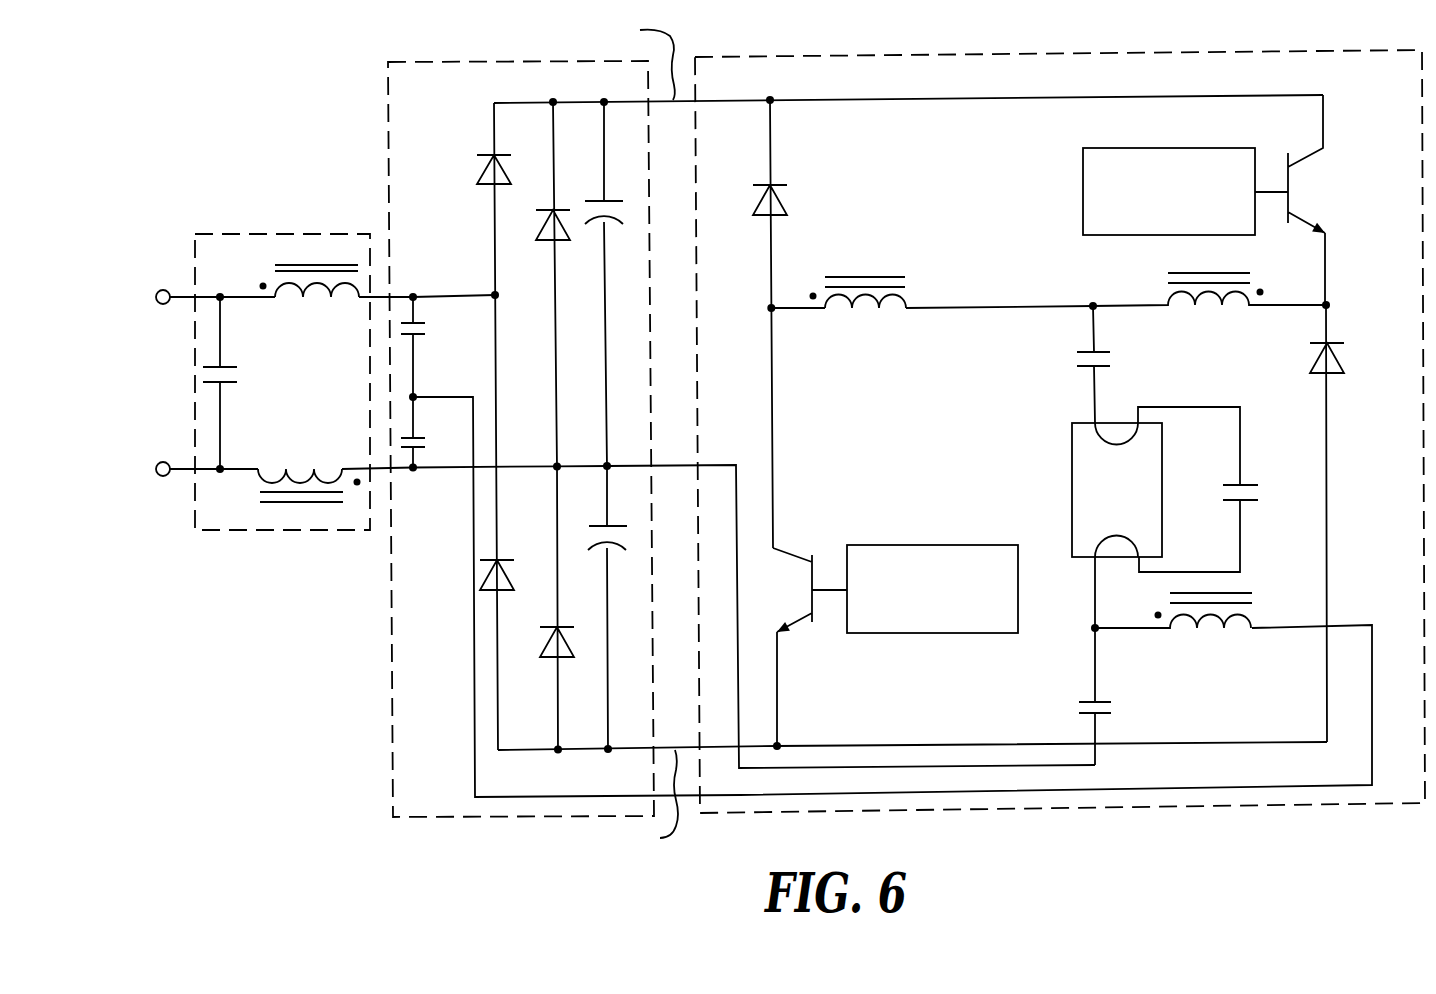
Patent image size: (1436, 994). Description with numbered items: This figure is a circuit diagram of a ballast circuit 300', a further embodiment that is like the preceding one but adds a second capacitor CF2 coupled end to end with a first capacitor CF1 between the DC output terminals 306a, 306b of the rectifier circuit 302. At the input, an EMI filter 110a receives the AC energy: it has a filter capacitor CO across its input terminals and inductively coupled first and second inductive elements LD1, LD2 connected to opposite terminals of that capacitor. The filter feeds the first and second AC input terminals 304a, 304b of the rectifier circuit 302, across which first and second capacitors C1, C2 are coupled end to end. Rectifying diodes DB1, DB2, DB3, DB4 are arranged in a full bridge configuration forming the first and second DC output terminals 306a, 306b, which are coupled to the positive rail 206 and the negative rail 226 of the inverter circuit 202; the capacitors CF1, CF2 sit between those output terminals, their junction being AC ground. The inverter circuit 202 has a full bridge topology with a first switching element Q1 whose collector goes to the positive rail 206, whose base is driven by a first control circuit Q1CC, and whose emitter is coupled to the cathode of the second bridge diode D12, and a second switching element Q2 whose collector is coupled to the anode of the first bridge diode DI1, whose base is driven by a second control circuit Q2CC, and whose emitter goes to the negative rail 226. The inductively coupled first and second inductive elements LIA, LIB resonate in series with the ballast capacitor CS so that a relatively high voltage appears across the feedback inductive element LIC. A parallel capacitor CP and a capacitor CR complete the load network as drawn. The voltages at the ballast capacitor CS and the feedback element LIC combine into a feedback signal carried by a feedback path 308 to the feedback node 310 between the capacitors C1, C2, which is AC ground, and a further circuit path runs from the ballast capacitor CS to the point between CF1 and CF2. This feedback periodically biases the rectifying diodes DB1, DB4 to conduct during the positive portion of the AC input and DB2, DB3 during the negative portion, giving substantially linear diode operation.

The ballast circuit 300' is at (790, 429).
The EMI filter 110a is at (265, 232).
The first AC input terminal 304a is at (380, 296).
The second AC input terminal 304b is at (380, 470).
The rectifier circuit 302 is at (578, 93).
The feedback node 310 is at (413, 396).
The feedback path 308 is at (475, 779).
The first DC output terminal 306a is at (629, 61).
The second DC output terminal 306b is at (643, 801).
The inverter circuit 202 is at (1083, 86).
The positive rail 206 is at (1285, 93).
The negative rail 226 is at (888, 745).
The first inductive element LD1 is at (310, 296).
The second inductive element LD2 is at (309, 471).
The filter capacitor CO is at (238, 383).
The first capacitor C1 is at (432, 347).
The second capacitor C2 is at (431, 432).
The first rectifying diode DB1 is at (478, 199).
The second rectifying diode DB2 is at (541, 284).
The third rectifying diode DB3 is at (514, 522).
The fourth rectifying diode DB4 is at (571, 610).
The first capacitor CF1 is at (616, 284).
The second capacitor CF2 is at (617, 610).
The first bridge diode DI1 is at (783, 324).
The first inductive element LIA is at (932, 311).
The second inductive element LIB is at (1211, 307).
The feedback inductive element LIC is at (1171, 610).
The resonant capacitor CR is at (1072, 362).
The parallel lamp capacitor CP is at (1183, 489).
The ballast capacitor CS is at (1109, 696).
The second bridge diode D12 is at (1305, 523).
The first switching element Q1 is at (1291, 200).
The second switching element Q2 is at (807, 649).
The first control circuit Q1CC is at (1169, 191).
The second control circuit Q2CC is at (932, 589).